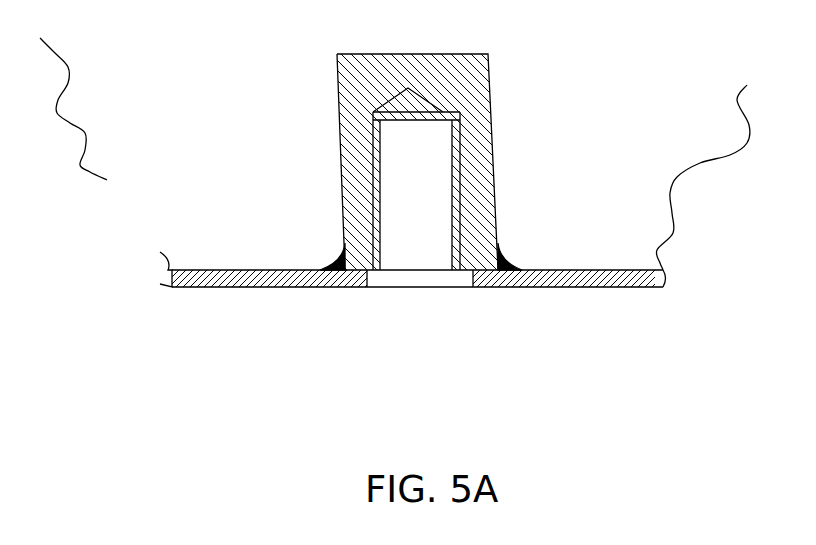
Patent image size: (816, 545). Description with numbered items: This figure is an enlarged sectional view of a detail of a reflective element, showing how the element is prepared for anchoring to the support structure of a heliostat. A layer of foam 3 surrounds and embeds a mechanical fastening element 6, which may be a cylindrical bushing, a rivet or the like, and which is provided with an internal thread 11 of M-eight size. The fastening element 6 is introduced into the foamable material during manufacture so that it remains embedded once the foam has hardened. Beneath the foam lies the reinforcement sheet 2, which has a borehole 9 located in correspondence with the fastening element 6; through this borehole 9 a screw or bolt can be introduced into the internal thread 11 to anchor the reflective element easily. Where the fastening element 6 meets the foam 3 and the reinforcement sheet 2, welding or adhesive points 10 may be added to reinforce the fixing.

The reinforcement sheet 2 is at (284, 287).
The layer of foam 3 is at (625, 152).
The mechanical fastening element 6 is at (470, 82).
The borehole 9 is at (418, 288).
The welding or adhesive points 10 is at (328, 263).
The internal thread 11 is at (362, 153).